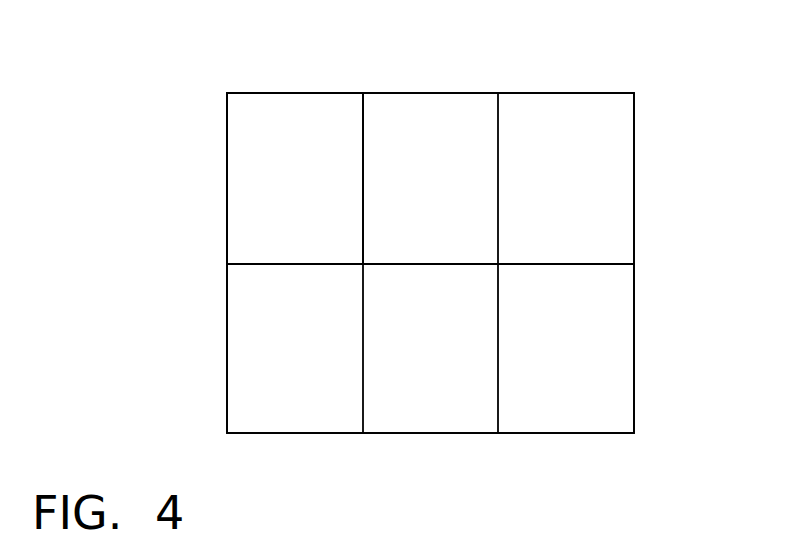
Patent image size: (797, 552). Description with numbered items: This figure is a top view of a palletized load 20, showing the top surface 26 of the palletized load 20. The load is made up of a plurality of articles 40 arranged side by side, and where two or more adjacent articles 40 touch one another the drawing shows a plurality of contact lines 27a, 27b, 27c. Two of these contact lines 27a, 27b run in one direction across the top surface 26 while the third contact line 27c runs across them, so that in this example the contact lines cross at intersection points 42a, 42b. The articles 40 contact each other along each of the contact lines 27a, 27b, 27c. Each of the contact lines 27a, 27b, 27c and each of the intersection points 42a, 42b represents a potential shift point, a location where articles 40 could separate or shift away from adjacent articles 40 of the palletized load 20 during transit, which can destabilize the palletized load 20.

The palletized load 20 is at (381, 93).
The top surface 26 is at (653, 379).
The articles 40 is at (273, 137).
The contact line 27a is at (363, 178).
The contact line 27b is at (498, 178).
The contact line 27c is at (566, 263).
The intersection point 42a is at (363, 265).
The intersection point 42b is at (498, 265).